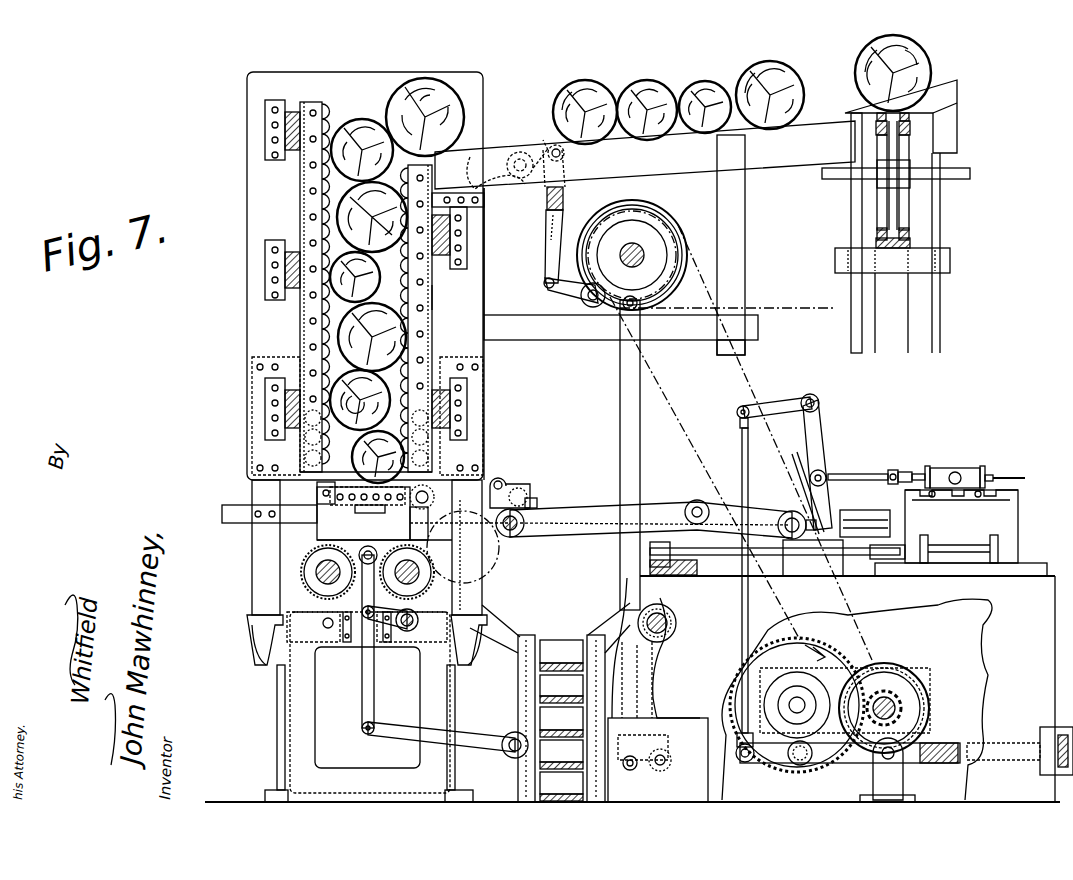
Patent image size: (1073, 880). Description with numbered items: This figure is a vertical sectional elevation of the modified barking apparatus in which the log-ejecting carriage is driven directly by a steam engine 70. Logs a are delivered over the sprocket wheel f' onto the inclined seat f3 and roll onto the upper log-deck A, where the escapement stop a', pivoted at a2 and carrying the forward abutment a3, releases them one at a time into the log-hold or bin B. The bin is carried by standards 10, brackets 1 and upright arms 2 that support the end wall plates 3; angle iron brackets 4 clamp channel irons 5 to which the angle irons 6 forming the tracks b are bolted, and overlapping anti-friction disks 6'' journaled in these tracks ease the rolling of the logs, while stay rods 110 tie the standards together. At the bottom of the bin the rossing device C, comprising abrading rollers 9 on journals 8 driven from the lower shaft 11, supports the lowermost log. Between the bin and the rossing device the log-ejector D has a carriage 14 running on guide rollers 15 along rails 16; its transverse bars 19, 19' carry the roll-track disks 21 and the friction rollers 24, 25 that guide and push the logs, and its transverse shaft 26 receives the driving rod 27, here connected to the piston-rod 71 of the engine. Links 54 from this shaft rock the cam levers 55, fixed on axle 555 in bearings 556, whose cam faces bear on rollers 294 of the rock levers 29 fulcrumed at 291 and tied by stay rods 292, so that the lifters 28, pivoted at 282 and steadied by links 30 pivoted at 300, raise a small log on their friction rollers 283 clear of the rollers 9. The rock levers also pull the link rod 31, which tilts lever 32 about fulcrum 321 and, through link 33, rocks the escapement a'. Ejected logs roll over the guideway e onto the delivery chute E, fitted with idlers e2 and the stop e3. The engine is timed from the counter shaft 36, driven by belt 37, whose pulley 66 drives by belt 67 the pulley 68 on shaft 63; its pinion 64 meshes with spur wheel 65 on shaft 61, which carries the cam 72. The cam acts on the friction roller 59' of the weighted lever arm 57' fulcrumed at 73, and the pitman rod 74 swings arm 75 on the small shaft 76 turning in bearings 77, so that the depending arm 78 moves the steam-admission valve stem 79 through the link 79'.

The brackets 1 is at (262, 640).
The upright arms 2 is at (484, 588).
The wall plates 3 is at (365, 276).
The angle iron brackets 4 is at (462, 408).
The channel irons 5 is at (292, 105).
The angle irons 6 is at (363, 381).
The anti-friction disks 6'' is at (394, 141).
The journals 8 is at (318, 578).
The rossing or abrading rollers 9 is at (312, 562).
The standards 10 is at (370, 702).
The lower driving shaft 11 is at (404, 263).
The carriage 14 is at (318, 545).
The guide rollers 15 is at (317, 492).
The rails 16 is at (228, 505).
The transverse bars 19 is at (370, 521).
The transverse bar 19' is at (550, 488).
The anti-friction rollers 21 is at (366, 470).
The friction rollers 24 is at (503, 478).
The friction rollers 25 is at (432, 497).
The transverse shaft 26 is at (512, 530).
The driving rod 27 is at (590, 533).
The lifters 28 is at (375, 690).
The rock levers 29 is at (395, 728).
The link 30 is at (412, 642).
The link rod 31 is at (620, 410).
The lever 32 is at (555, 293).
The link 33 is at (545, 250).
The upper counter shaft 36 is at (632, 252).
The belt 37 is at (775, 200).
The links 54 is at (660, 502).
The rocking cam levers 55 is at (632, 648).
The lever arm 57' is at (897, 699).
The friction roller 59' is at (796, 770).
The shaft 61 is at (790, 712).
The shaft 63 is at (893, 700).
The spur pinion 64 is at (900, 714).
The spur wheel 65 is at (848, 665).
The pulley 66 is at (668, 235).
The belt 67 is at (745, 372).
The lower pulley 68 is at (935, 685).
The steam engine 70 is at (961, 533).
The piston-rod 71 is at (865, 512).
The cam 72 is at (780, 700).
The fulcrum 73 is at (888, 760).
The pitman rod 74 is at (743, 462).
The arm 75 is at (790, 398).
The small horizontal shaft 76 is at (820, 400).
The bearings 77 is at (795, 465).
The depending arm 78 is at (823, 425).
The steam-admission valve stem 79 is at (968, 466).
The link 79' is at (870, 466).
The stay rods 110 is at (418, 622).
The pivot 282 is at (365, 733).
The friction-rollers 283 is at (460, 514).
The fulcrum 291 is at (510, 735).
The stay rods 292 is at (634, 770).
The anti-friction rollers 294 is at (665, 756).
The pivot 300 is at (355, 640).
The fulcrum 321 is at (593, 300).
The axle 555 is at (672, 626).
The bearings 556 is at (680, 682).
The upper log-deck A is at (645, 155).
The log-hold or bin B is at (442, 297).
The barking or rossing device C is at (463, 547).
The log-ejector D is at (363, 513).
The delivery chute or way E is at (550, 718).
The logs a is at (634, 143).
The escapement stop a' is at (547, 154).
The pivot a2 is at (519, 180).
The stop or abutment a3 is at (487, 160).
The tracks b is at (322, 200).
The guideway e is at (495, 629).
The anti-friction rollers or idlers e2 is at (561, 720).
The ward or stop e3 is at (610, 620).
The sprocket wheel f' is at (929, 175).
The seat f3 is at (848, 118).